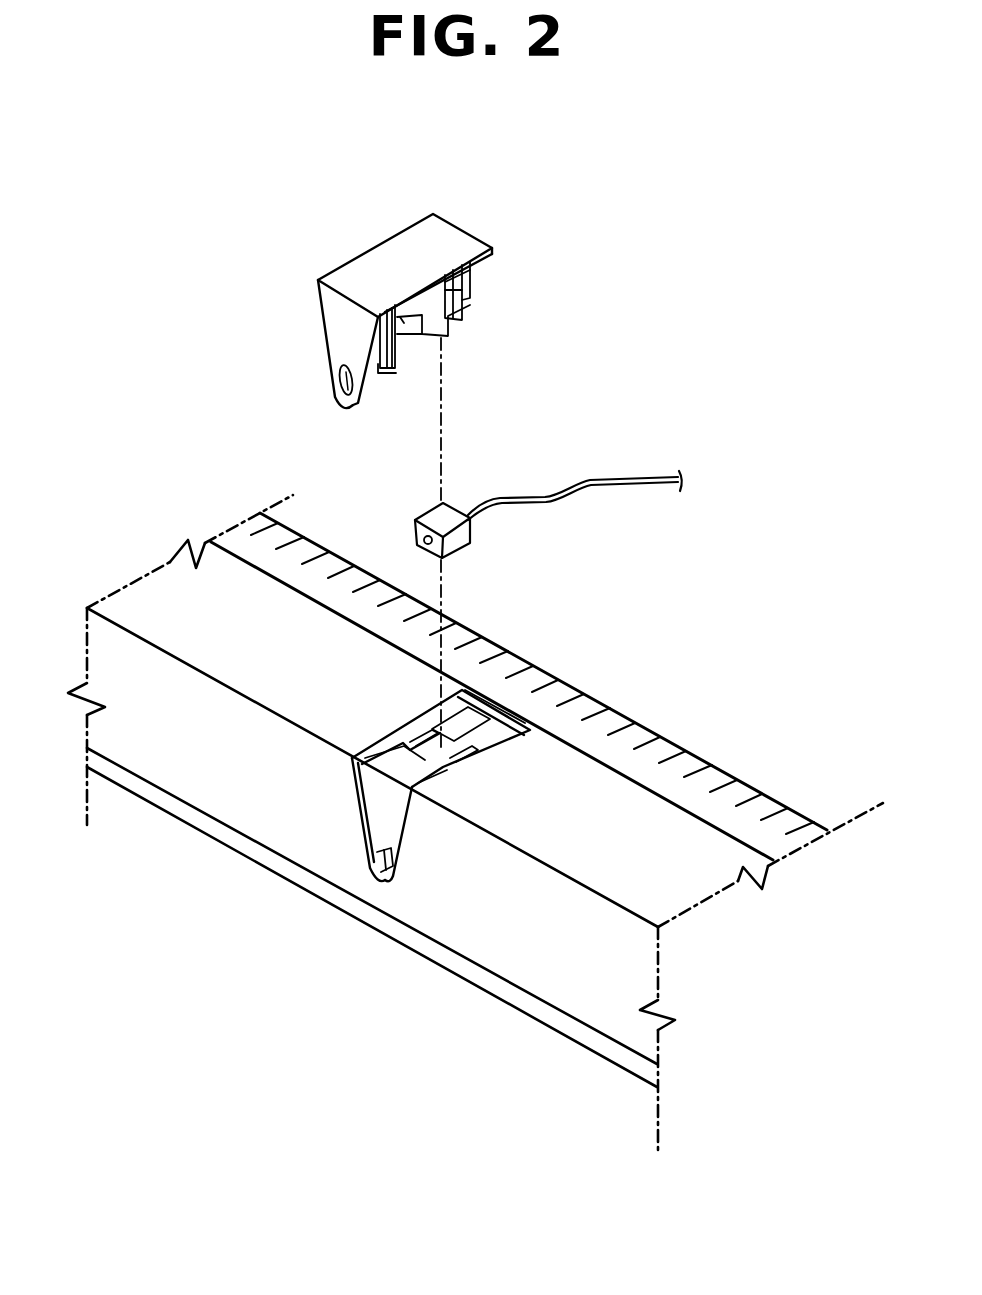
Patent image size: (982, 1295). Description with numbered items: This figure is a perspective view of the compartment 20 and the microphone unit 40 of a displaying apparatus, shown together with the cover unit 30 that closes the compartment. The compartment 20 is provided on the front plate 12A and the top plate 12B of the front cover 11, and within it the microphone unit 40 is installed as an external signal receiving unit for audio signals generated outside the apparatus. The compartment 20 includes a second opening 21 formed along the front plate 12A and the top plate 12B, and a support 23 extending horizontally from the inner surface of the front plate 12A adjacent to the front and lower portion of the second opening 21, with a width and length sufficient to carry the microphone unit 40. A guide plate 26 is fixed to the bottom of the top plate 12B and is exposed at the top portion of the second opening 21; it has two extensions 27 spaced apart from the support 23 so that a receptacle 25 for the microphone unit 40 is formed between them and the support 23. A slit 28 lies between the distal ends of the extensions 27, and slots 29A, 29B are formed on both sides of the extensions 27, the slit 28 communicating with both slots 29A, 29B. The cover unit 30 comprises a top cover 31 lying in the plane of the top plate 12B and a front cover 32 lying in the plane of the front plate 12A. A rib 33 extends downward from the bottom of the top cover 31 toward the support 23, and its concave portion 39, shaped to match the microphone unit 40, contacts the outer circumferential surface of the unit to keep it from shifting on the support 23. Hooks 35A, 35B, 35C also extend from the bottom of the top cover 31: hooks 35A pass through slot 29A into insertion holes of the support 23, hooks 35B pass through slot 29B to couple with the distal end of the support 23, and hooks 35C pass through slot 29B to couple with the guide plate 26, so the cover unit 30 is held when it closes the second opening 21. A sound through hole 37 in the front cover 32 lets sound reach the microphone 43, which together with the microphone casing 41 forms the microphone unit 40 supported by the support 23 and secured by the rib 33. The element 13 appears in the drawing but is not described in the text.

The front cover 11 is at (140, 582).
The front plate 12A is at (620, 970).
The top plate 12B is at (683, 883).
The weather strip 13 is at (772, 803).
The compartment 20 is at (237, 1016).
The second opening 21 is at (381, 806).
The support 23 is at (371, 873).
The receptacle 25 is at (389, 846).
The guide plate 26 is at (503, 742).
The extensions 27 is at (422, 735).
The slit 28 is at (427, 775).
The slot 29A is at (360, 768).
The slot 29B is at (470, 715).
The cover unit 30 is at (473, 219).
The top cover 31 is at (343, 270).
The front cover 32 is at (340, 318).
The rib 33 is at (445, 343).
The hooks 35A is at (395, 380).
The hooks 35B is at (472, 305).
The hooks 35C is at (473, 277).
The sound through hole 37 is at (347, 373).
The concave portion 39 is at (400, 319).
The microphone unit 40 is at (587, 522).
The microphone casing 41 is at (457, 515).
The microphone 43 is at (458, 550).